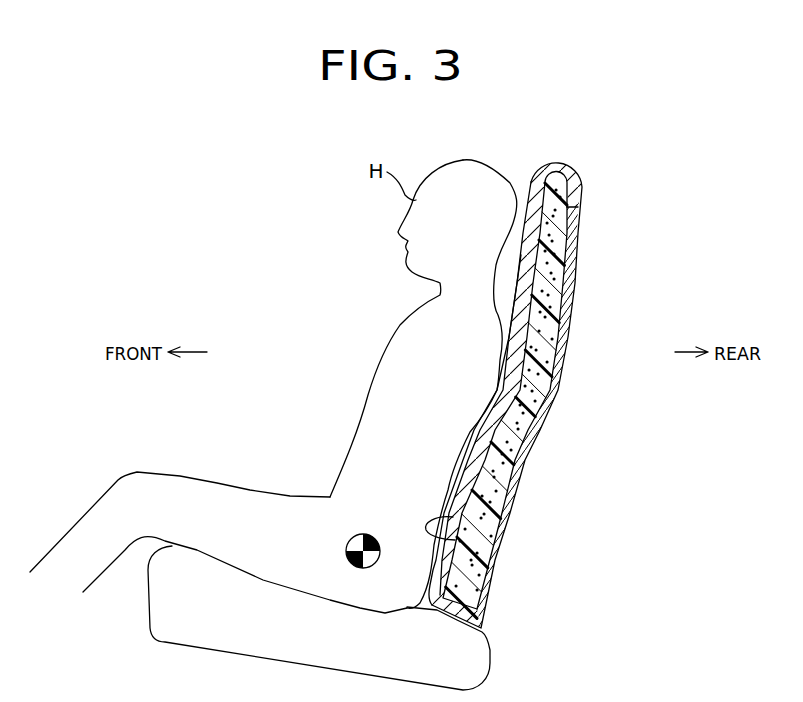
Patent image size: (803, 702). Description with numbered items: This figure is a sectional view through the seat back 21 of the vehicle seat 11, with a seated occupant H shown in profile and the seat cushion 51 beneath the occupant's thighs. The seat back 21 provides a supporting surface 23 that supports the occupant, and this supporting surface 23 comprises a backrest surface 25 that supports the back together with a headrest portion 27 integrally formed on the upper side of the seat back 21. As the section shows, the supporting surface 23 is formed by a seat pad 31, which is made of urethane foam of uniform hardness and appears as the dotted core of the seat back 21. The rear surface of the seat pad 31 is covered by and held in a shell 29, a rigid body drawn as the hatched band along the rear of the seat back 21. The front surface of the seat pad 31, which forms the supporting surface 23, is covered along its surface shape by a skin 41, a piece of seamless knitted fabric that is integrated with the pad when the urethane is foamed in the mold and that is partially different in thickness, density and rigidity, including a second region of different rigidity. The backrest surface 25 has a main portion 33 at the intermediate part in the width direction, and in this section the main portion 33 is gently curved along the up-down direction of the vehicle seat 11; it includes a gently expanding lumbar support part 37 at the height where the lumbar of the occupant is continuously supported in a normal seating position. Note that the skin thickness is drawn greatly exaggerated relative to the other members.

The vehicle seat 11 is at (597, 166).
The seat back 21 is at (506, 318).
The supporting surface 23 is at (452, 461).
The backrest surface 25 is at (486, 389).
The headrest portion 27 is at (516, 210).
The shell 29 is at (582, 275).
The seat pad 31 is at (537, 400).
The main portion 33 is at (483, 415).
The lumbar support part 37 is at (453, 540).
The skin 41 is at (455, 485).
The seat cushion 51 is at (163, 608).